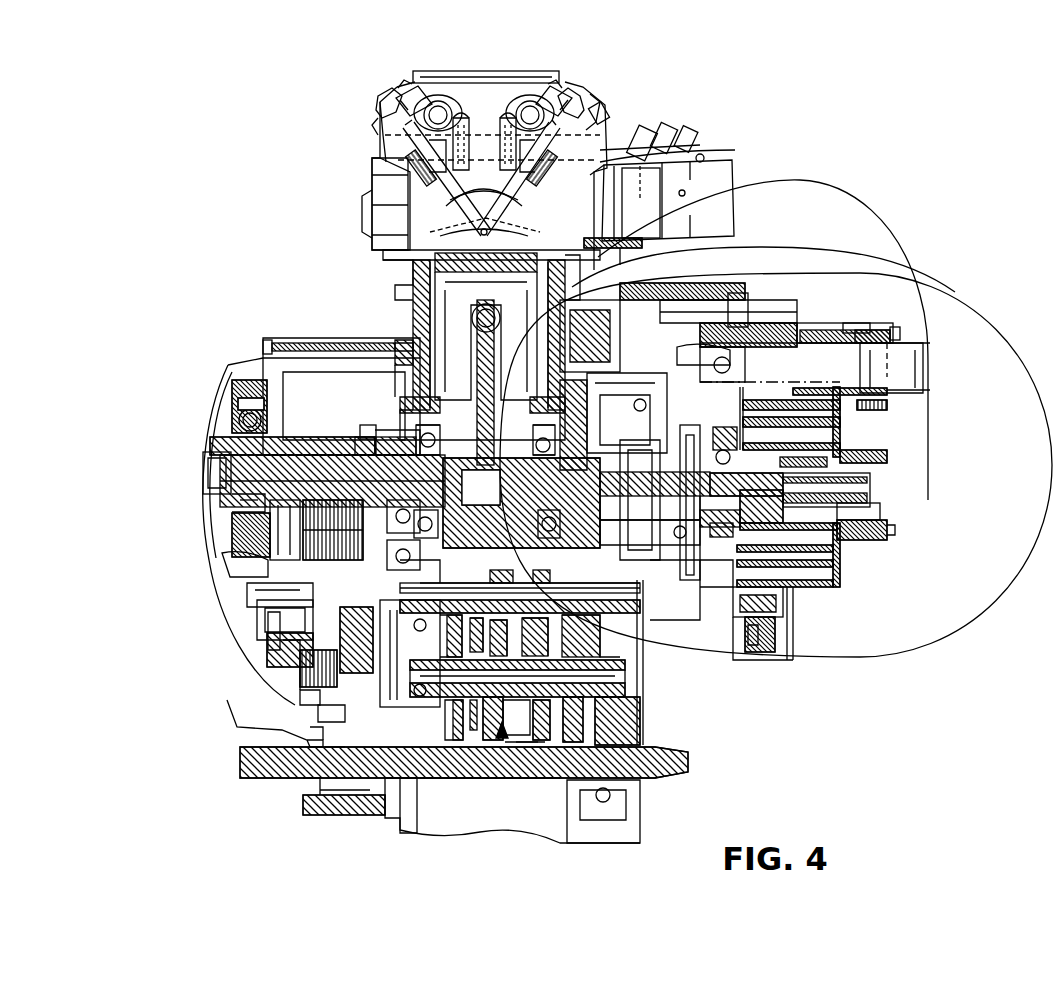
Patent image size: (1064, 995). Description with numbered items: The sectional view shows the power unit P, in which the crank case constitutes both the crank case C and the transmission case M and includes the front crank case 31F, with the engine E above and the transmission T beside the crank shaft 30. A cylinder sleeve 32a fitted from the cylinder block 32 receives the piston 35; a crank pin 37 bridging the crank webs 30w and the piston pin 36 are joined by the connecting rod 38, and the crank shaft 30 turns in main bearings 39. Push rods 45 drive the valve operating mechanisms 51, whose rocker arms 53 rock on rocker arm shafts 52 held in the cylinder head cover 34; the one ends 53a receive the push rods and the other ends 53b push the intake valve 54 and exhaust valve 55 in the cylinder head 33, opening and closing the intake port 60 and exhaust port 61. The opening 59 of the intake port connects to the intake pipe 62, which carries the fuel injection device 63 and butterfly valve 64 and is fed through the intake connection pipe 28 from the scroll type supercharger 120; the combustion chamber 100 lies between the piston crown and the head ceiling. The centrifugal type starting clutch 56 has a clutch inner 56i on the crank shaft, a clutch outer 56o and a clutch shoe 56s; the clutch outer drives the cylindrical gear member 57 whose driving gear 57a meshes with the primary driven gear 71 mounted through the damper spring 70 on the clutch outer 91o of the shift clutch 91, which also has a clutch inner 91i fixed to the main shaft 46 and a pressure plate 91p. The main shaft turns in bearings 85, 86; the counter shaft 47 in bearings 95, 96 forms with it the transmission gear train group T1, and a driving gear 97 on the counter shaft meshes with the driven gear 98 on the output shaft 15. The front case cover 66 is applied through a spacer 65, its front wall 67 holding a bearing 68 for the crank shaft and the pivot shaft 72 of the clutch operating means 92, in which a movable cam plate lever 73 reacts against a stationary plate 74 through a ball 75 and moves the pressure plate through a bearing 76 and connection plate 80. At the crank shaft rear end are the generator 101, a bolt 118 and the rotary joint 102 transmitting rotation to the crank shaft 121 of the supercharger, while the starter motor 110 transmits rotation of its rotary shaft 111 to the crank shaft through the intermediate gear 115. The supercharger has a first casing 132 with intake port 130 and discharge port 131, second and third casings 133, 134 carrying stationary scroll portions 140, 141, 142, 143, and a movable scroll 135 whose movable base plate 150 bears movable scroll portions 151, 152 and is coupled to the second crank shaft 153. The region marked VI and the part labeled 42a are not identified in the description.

The engine E is at (352, 152).
The power unit P is at (210, 452).
The crank case C is at (465, 501).
The transmission case M is at (517, 722).
The transmission T is at (334, 727).
The transmission gear train group T1 is at (508, 733).
The section view region VI is at (965, 300).
The output shaft 15 is at (440, 762).
The intake connection pipe 28 is at (822, 188).
The crank shaft 30 is at (366, 437).
The crank webs 30w is at (374, 453).
The front crank case 31F is at (403, 347).
The cylinder block 32 is at (410, 275).
The cylinder sleeve 32a is at (432, 372).
The cylinder head 33 is at (372, 168).
The cylinder head cover 34 is at (380, 112).
The piston 35 is at (494, 330).
The piston pin 36 is at (656, 257).
The crank pin 37 is at (476, 432).
The connecting rod 38 is at (495, 345).
The main bearings 39 is at (496, 440).
The case wall 42a is at (547, 540).
The push rods 45 is at (484, 196).
The main shaft 46 is at (322, 680).
The counter shaft 47 is at (548, 746).
The valve operating mechanisms 51 is at (584, 96).
The rocker arm shafts 52 is at (437, 100).
The rocker arms 53 is at (418, 98).
The one ends of rocker arms 53a is at (480, 82).
The other ends of rocker arms 53b is at (378, 96).
The intake valve 54 is at (602, 242).
The exhaust valve 55 is at (478, 232).
The centrifugal type starting clutch 56 is at (248, 378).
The clutch inner 56i is at (232, 408).
The clutch outer 56o is at (292, 370).
The clutch shoe 56s is at (232, 534).
The cylindrical gear member 57 is at (310, 453).
The driving gear 57a is at (372, 440).
The opening 59 is at (626, 188).
The intake port 60 is at (562, 262).
The exhaust port 61 is at (413, 266).
The intake pipe 62 is at (718, 197).
The fuel injection device 63 is at (643, 135).
The butterfly valve 64 is at (734, 162).
The spacer 65 is at (332, 343).
The front case cover 66 is at (284, 340).
The front wall 67 is at (205, 456).
The bearing 68 is at (232, 498).
The damper spring 70 is at (303, 545).
The primary driven gear 71 is at (368, 806).
The pivot shaft 72 is at (252, 611).
The movable cam plate lever 73 is at (287, 652).
The stationary plate 74 is at (256, 590).
The ball 75 is at (268, 566).
The bearing 76 is at (292, 637).
The connection plate 80 is at (302, 668).
The bearing 85 is at (413, 558).
The bearing 86 is at (622, 628).
The shift clutch 91 is at (333, 718).
The clutch inner 91i is at (245, 525).
The clutch outer 91o is at (314, 692).
The pressure plate 91p is at (278, 732).
The clutch operating means 92 is at (268, 622).
The bearing 95 is at (392, 782).
The bearing 96 is at (640, 694).
The driving gear 97 is at (640, 660).
The driven gear 98 is at (640, 728).
The combustion chamber 100 is at (458, 206).
The generator 101 is at (685, 590).
The rotary joint 102 is at (722, 570).
The starter motor 110 is at (736, 300).
The rotary shaft 111 is at (662, 292).
The intermediate gear 115 is at (650, 398).
The bolt 118 is at (643, 562).
The scroll type supercharger 120 is at (905, 332).
The crank shaft 121 is at (760, 655).
The intake port 130 is at (908, 370).
The discharge port 131 is at (872, 490).
The first casing 132 is at (883, 327).
The second casing 133 is at (770, 336).
The third casing 134 is at (860, 327).
The movable scroll 135 is at (797, 575).
The stationary scroll portion 140 is at (880, 515).
The stationary scroll portion 141 is at (808, 343).
The stationary scroll portion 142 is at (835, 447).
The stationary scroll portion 143 is at (843, 397).
The movable base plate 150 is at (840, 530).
The movable scroll portion 151 is at (775, 565).
The movable scroll portion 152 is at (835, 550).
The second crank shaft 153 is at (745, 590).